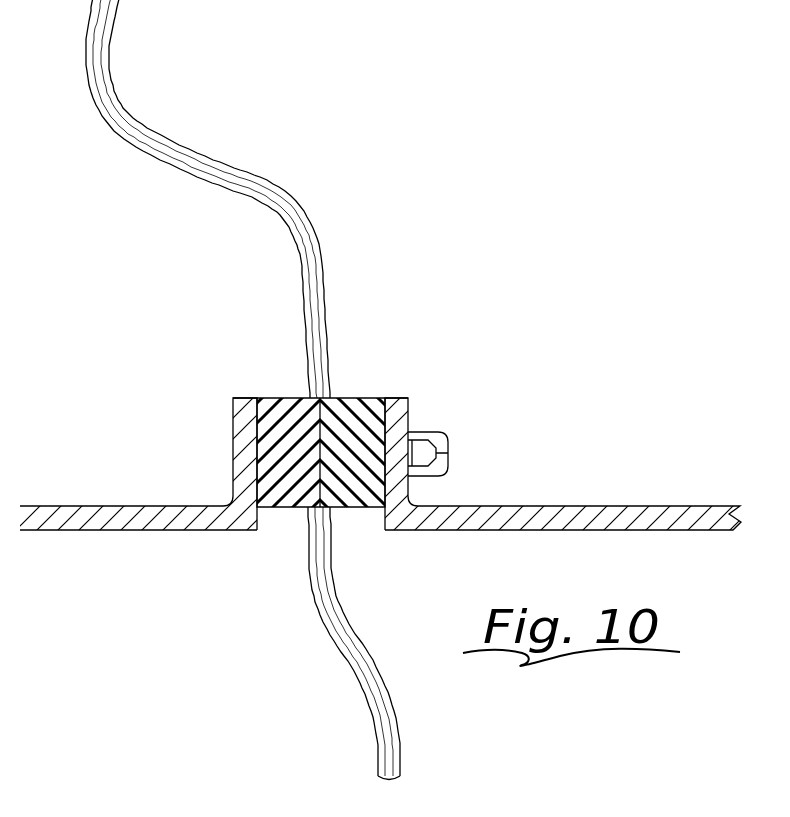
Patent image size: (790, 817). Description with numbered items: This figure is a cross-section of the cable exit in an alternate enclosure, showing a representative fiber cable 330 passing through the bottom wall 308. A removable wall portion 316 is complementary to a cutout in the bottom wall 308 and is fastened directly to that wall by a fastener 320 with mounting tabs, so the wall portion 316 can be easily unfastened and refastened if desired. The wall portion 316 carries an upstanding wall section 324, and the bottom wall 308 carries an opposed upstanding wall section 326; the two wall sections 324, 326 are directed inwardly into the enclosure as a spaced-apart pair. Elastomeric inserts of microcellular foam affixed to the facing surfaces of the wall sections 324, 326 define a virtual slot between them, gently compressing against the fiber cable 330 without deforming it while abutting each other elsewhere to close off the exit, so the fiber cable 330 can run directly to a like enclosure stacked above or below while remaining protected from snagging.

The bottom wall 308 is at (560, 516).
The wall portion 316 is at (142, 511).
The fastener 320 is at (433, 477).
The upstanding wall section 324 is at (246, 432).
The upstanding wall section 326 is at (404, 424).
The fiber cable 330 is at (315, 302).